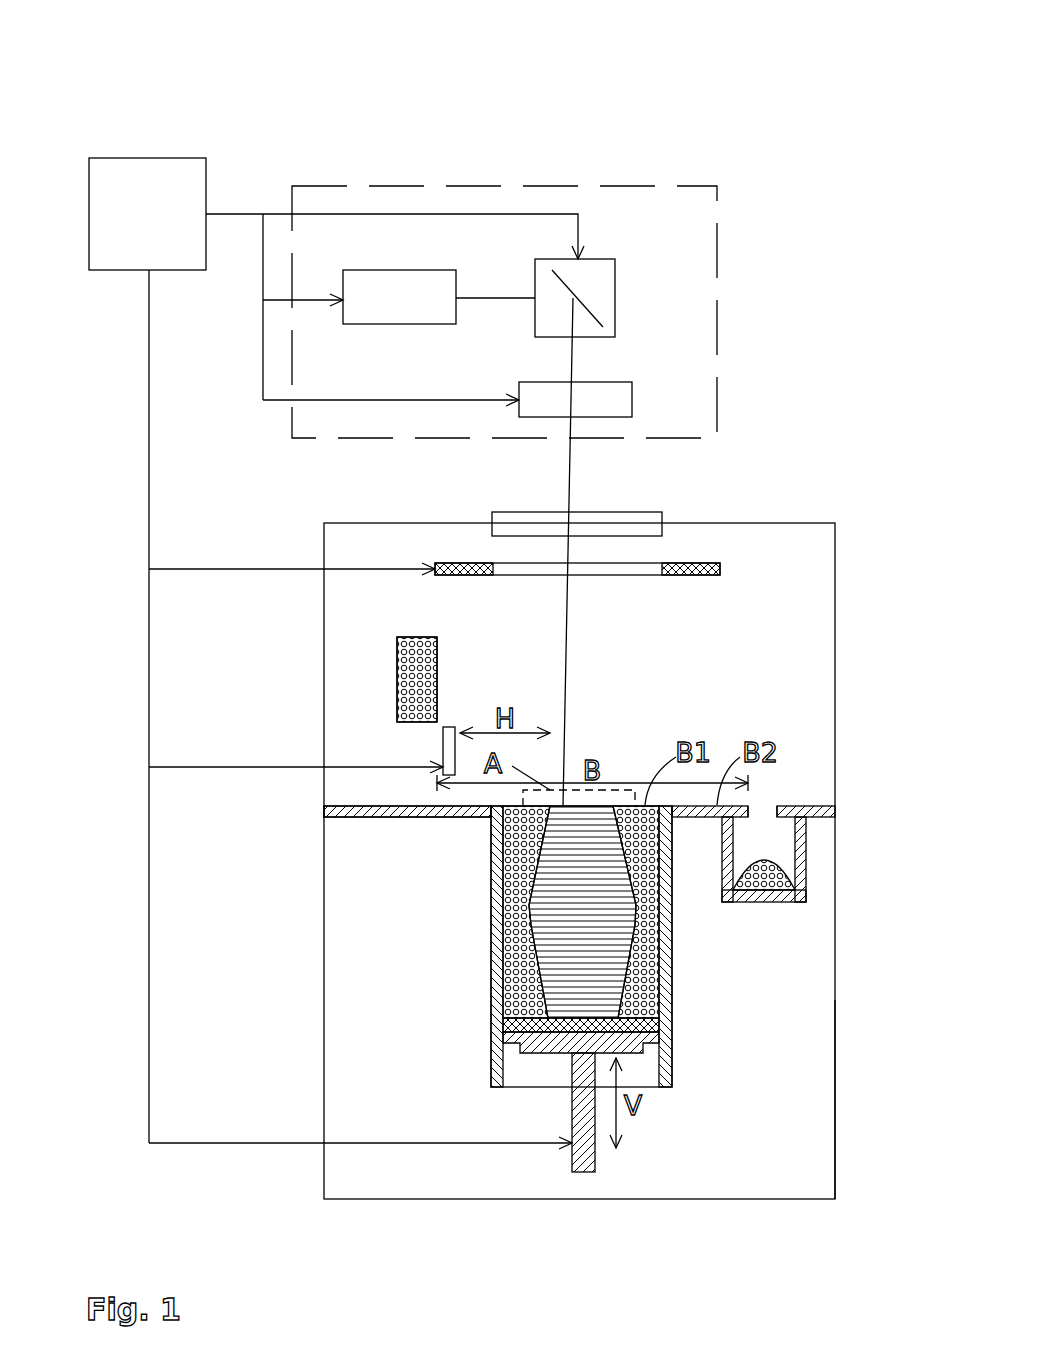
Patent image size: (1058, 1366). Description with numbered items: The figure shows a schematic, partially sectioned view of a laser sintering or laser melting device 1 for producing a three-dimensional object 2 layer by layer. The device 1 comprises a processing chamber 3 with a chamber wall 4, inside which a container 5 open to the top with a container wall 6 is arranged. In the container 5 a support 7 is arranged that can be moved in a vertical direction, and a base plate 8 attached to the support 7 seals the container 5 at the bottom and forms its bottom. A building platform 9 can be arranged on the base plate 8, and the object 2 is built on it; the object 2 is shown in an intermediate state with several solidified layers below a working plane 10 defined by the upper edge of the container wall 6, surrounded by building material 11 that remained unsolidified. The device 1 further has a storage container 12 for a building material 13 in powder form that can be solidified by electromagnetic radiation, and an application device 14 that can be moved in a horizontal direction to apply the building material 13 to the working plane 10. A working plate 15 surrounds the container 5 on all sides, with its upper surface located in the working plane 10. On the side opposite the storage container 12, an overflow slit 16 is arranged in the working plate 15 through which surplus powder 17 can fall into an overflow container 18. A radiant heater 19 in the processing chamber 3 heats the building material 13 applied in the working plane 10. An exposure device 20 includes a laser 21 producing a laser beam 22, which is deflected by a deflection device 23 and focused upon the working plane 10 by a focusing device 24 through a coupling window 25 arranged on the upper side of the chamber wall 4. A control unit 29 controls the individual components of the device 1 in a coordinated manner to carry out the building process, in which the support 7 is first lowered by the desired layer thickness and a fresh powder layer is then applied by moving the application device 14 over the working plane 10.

The laser sintering or laser melting device 1 is at (857, 128).
The object 2 is at (558, 918).
The processing chamber 3 is at (838, 640).
The chamber wall 4 is at (838, 1100).
The container 5 is at (673, 1000).
The container wall 6 is at (665, 946).
The support 7 is at (558, 1050).
The base plate 8 is at (523, 1043).
The building platform 9 is at (503, 1027).
The working plane 10 is at (380, 805).
The building material 11 is at (490, 848).
The storage container 12 is at (415, 637).
The building material in powder form 13 is at (437, 677).
The application device 14 is at (447, 752).
The working plate 15 is at (365, 818).
The overflow slit 16 is at (775, 806).
The surplus powder 17 is at (775, 868).
The overflow container 18 is at (762, 894).
The radiant heater 19 is at (683, 575).
The exposure device 20 is at (717, 298).
The laser 21 is at (398, 322).
The laser beam 22 is at (477, 298).
The deflection device 23 is at (602, 270).
The focusing device 24 is at (603, 394).
The coupling window 25 is at (615, 512).
The control unit 29 is at (147, 214).